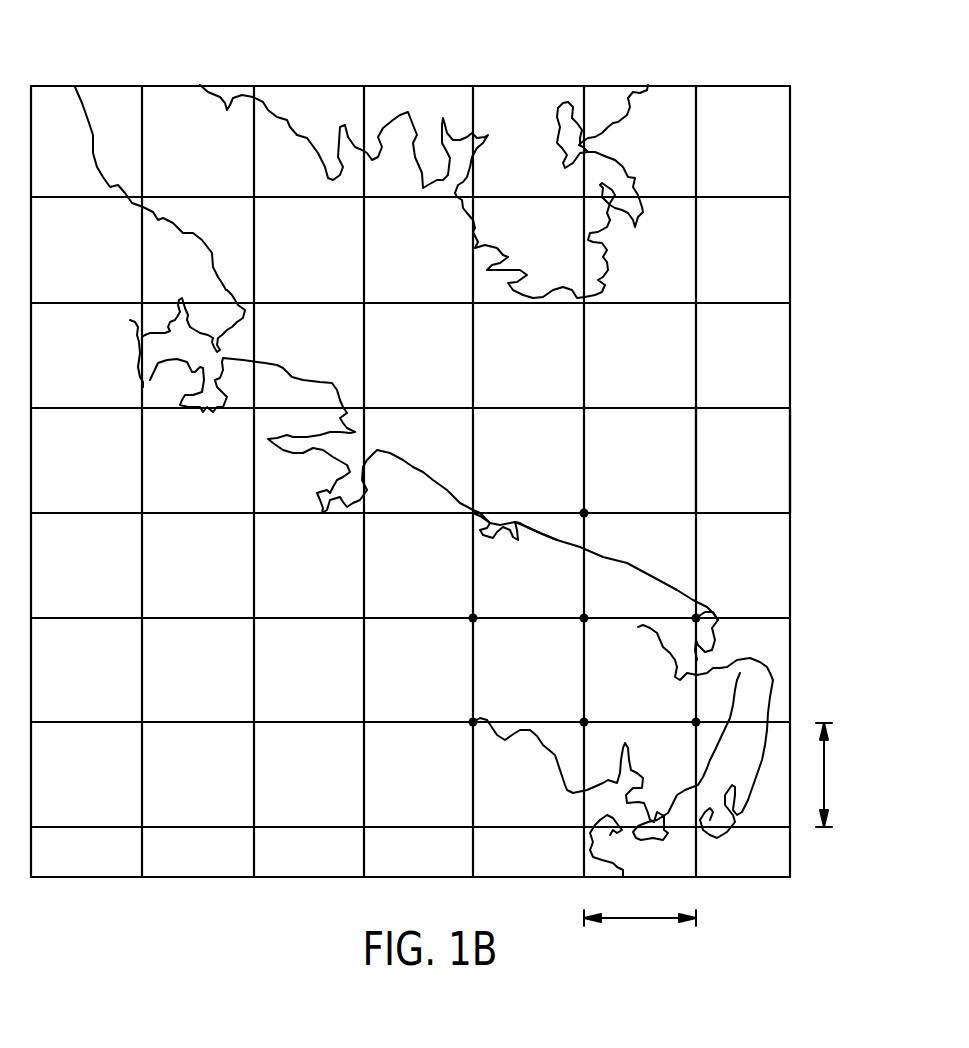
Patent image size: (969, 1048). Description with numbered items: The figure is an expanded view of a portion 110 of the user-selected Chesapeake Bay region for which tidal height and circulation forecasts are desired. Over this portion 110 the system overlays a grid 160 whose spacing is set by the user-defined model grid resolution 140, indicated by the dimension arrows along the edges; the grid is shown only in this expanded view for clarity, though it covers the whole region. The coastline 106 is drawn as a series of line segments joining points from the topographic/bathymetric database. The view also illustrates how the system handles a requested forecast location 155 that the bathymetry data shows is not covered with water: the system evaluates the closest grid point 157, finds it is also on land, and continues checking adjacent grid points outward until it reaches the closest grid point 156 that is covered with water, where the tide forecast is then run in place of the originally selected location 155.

The portion 110 is at (535, 84).
The coastline 106 is at (630, 562).
The grid point 156 is at (586, 510).
The grid point 157 is at (579, 620).
The location 155 is at (580, 720).
The grid 160 is at (760, 512).
The model grid resolution 140 is at (826, 772).